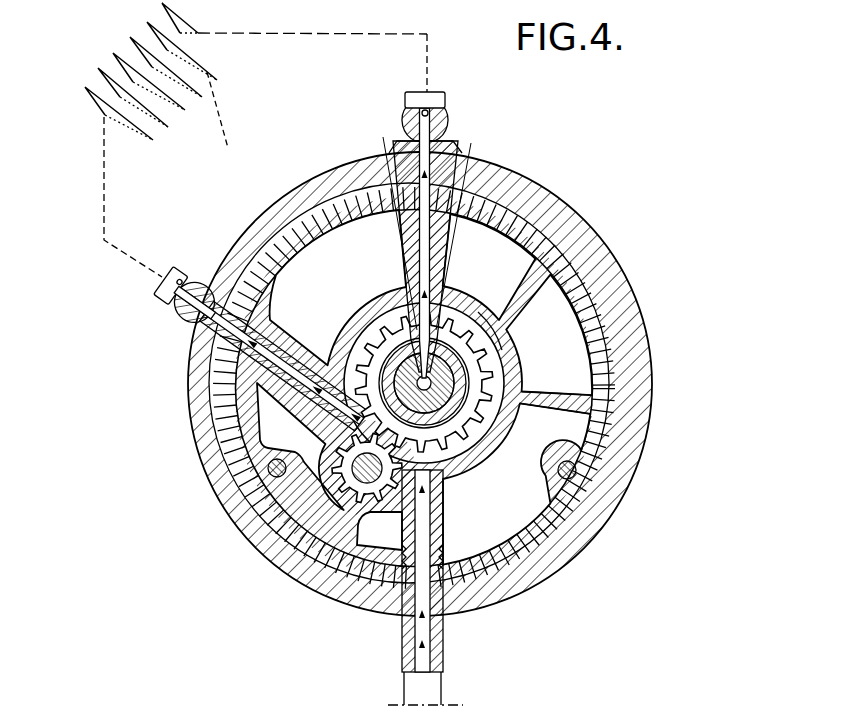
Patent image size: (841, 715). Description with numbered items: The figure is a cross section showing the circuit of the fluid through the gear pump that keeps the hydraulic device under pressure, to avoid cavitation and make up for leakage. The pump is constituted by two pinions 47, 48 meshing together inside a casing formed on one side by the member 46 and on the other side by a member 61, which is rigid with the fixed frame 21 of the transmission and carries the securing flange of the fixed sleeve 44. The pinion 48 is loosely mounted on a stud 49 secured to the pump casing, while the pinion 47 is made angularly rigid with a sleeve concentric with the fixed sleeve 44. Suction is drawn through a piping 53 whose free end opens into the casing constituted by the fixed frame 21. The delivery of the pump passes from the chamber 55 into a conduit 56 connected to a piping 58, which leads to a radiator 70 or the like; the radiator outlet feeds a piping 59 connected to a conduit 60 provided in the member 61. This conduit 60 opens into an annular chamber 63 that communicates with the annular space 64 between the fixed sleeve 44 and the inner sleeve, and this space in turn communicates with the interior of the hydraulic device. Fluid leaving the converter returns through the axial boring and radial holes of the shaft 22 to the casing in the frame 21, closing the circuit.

The fixed frame 21 is at (293, 200).
The shaft 22 is at (460, 470).
The fixed sleeve 44 is at (470, 398).
The member 46 is at (562, 267).
The pinion 47 is at (540, 408).
The pinion 48 is at (352, 490).
The stud 49 is at (366, 478).
The piping 53 is at (440, 650).
The chamber 55 is at (327, 425).
The conduit 56 is at (235, 340).
The piping 58 is at (127, 254).
The piping 59 is at (425, 65).
The conduit 60 is at (430, 256).
The member 61 is at (432, 250).
The annular chamber 63 is at (452, 315).
The annular space 64 is at (470, 365).
The radiator 70 is at (256, 89).